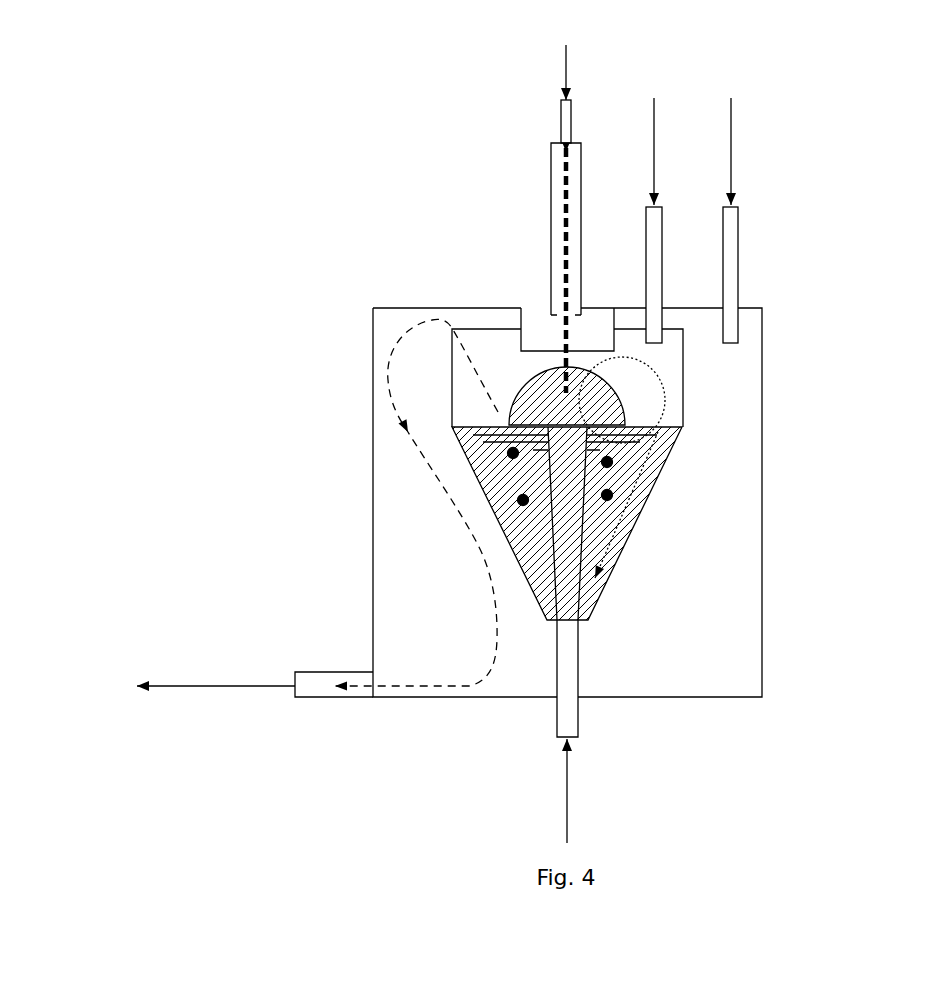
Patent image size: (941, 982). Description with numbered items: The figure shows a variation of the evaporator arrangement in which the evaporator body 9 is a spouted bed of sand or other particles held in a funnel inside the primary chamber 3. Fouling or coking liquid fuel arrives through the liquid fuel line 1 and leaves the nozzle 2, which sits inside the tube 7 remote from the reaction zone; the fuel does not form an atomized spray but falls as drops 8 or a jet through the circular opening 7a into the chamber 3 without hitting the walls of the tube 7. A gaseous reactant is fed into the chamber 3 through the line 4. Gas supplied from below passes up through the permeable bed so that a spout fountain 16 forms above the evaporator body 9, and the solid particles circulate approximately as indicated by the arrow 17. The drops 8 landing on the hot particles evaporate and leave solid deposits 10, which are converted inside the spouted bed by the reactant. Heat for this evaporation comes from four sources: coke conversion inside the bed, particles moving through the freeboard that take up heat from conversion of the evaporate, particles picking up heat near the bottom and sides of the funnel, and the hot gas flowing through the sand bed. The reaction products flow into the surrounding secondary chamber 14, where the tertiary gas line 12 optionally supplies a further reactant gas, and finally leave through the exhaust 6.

The liquid fuel line 1 is at (620, 92).
The spray nozzle 2 is at (519, 206).
The chamber 3 is at (640, 378).
The line 4 is at (750, 216).
The exhaust 6 is at (317, 508).
The tube 7 is at (506, 225).
The opening 7a is at (523, 288).
The drops 8 is at (449, 307).
The evaporator body 9 is at (449, 634).
The solid deposits 10 is at (430, 387).
The tertiary gas line 12 is at (797, 220).
The chamber 14 is at (642, 502).
The spout fountain 16 is at (695, 422).
The arrow 17 is at (730, 467).